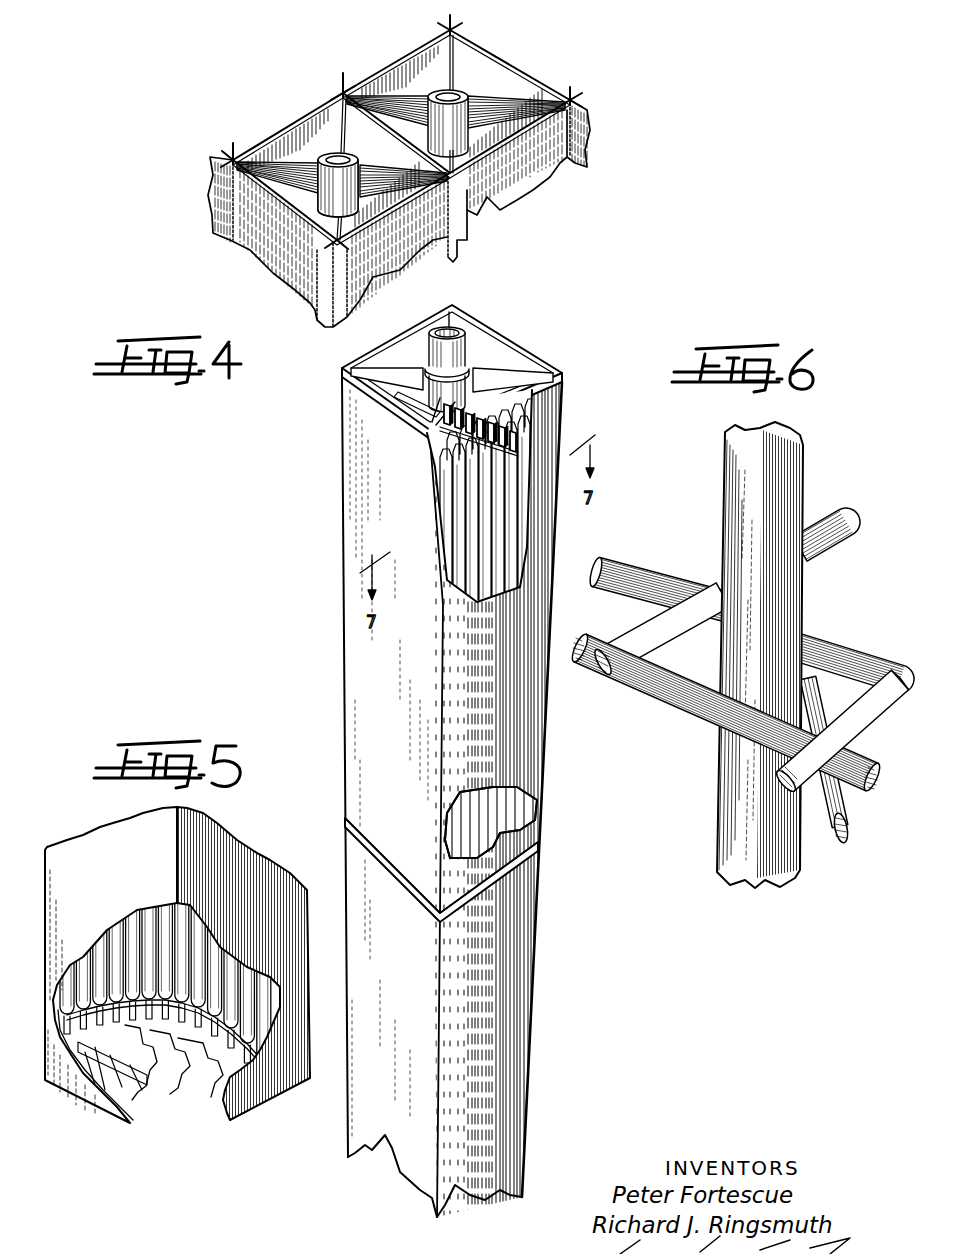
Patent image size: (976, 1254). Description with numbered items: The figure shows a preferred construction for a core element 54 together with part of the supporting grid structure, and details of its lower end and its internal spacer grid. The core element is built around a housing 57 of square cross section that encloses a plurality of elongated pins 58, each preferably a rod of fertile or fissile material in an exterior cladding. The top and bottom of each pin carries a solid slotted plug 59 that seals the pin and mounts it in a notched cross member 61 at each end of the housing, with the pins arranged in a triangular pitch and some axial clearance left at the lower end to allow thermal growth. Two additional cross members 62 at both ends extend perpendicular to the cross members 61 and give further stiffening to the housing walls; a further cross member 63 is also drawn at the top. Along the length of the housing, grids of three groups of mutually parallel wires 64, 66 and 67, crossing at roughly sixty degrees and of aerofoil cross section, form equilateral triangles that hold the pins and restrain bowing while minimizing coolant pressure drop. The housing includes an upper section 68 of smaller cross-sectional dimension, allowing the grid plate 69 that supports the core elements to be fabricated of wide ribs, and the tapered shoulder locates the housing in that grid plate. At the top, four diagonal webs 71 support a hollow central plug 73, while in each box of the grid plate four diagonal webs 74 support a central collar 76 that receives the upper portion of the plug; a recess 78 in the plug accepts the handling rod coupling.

In FIG. 4, the core element 54 is at (543, 912).
In FIG. 4, the housing 57 is at (513, 968).
In FIG. 4, the pins 58 is at (513, 473).
In FIG. 5, the pins 58 is at (118, 935).
In FIG. 6, the pins 58 is at (803, 467).
In FIG. 5, the plug 59 is at (177, 965).
In FIG. 4, the cross member 61 is at (440, 443).
In FIG. 5, the cross member 61 is at (170, 1085).
In FIG. 4, the cross members 62 is at (477, 403).
In FIG. 5, the cross members 62 is at (130, 1085).
In FIG. 4, the cross member 63 is at (410, 418).
In FIG. 6, the wires 64 is at (842, 843).
In FIG. 6, the wires 66 is at (867, 677).
In FIG. 6, the wires 67 is at (783, 780).
In FIG. 4, the upper section 68 is at (350, 512).
In FIG. 4, the grid plate 69 is at (545, 165).
In FIG. 4, the diagonal webs 71 is at (505, 370).
In FIG. 4, the central plug 73 is at (463, 358).
In FIG. 4, the diagonal webs 74 is at (503, 107).
In FIG. 4, the central collar 76 is at (490, 217).
In FIG. 4, the recess 78 is at (450, 330).